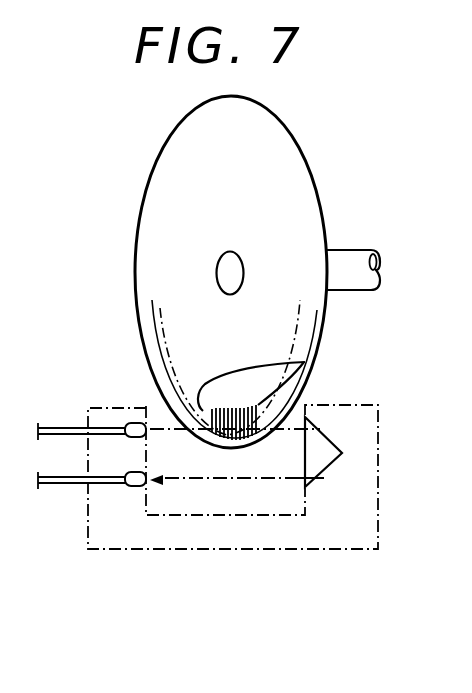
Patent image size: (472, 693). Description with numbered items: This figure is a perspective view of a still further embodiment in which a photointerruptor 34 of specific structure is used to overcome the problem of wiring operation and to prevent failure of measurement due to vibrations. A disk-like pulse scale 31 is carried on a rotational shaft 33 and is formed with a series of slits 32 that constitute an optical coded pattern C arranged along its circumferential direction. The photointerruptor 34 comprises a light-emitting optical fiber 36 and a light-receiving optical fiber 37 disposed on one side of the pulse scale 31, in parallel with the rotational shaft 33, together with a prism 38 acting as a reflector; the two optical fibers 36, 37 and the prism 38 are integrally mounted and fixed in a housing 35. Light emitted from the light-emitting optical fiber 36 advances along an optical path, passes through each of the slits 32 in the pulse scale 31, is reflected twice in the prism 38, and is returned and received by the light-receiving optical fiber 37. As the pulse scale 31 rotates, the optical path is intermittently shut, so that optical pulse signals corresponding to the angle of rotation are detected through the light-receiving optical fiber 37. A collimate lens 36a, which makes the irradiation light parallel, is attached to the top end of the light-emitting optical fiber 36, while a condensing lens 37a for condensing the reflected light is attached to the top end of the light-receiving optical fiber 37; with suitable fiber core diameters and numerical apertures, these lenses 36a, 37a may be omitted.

The pulse scale 31 is at (139, 226).
The slits 32 is at (305, 362).
The rotational shaft 33 is at (360, 250).
The photointerruptor 34 is at (132, 551).
The housing 35 is at (200, 547).
The light-emitting optical fiber 36 is at (70, 427).
The collimate lens 36a is at (130, 423).
The light-receiving optical fiber 37 is at (68, 486).
The condensing lens 37a is at (130, 488).
The prism 38 is at (324, 470).
The optical coded pattern C is at (148, 341).